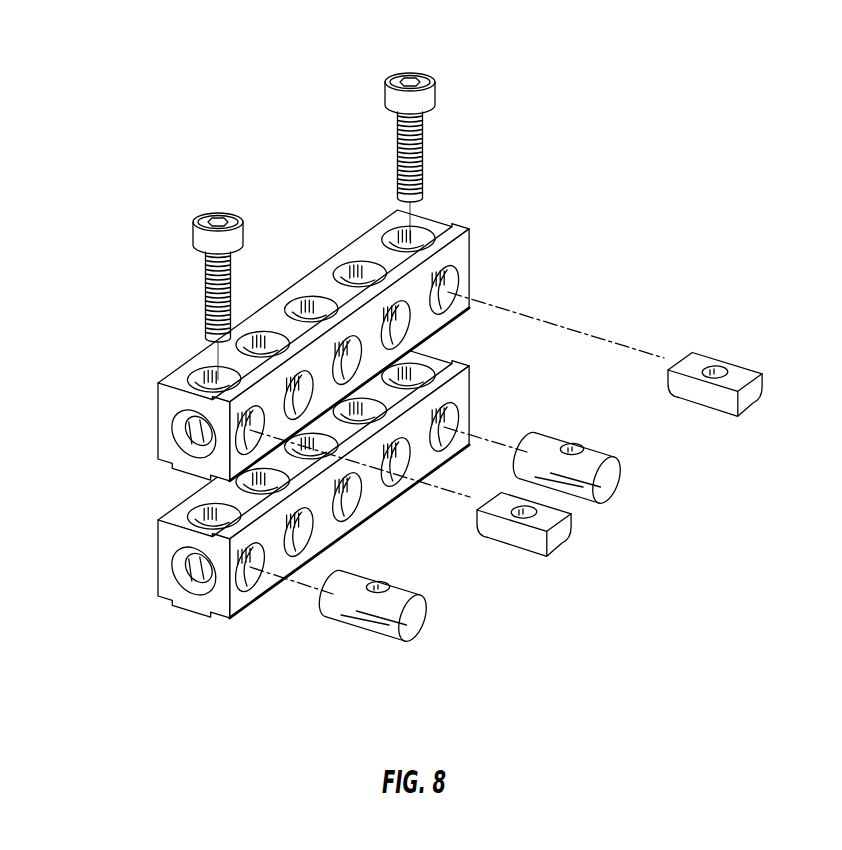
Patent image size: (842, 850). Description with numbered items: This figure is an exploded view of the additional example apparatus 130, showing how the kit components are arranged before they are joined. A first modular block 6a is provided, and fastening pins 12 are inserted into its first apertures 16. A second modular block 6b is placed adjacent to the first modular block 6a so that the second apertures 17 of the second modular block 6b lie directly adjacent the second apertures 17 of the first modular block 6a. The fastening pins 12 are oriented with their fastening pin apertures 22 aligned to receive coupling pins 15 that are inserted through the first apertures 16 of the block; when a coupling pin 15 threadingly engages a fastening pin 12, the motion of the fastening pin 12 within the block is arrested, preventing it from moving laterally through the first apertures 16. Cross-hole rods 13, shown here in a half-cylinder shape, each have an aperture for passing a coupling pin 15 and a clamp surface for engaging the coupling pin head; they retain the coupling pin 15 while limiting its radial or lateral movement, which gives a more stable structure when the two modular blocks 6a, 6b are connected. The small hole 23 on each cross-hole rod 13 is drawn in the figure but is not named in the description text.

The apparatus 130 is at (406, 351).
The first modular block 6a is at (160, 517).
The second modular block 6b is at (163, 373).
The coupling pin 15 is at (433, 78).
The first aperture 16 is at (452, 284).
The second aperture 17 is at (422, 235).
The fastening pin 12 is at (619, 489).
The cross-hole rod 13 is at (753, 412).
The fastening pin aperture 22 is at (574, 445).
The T-nut hole 23 is at (717, 370).